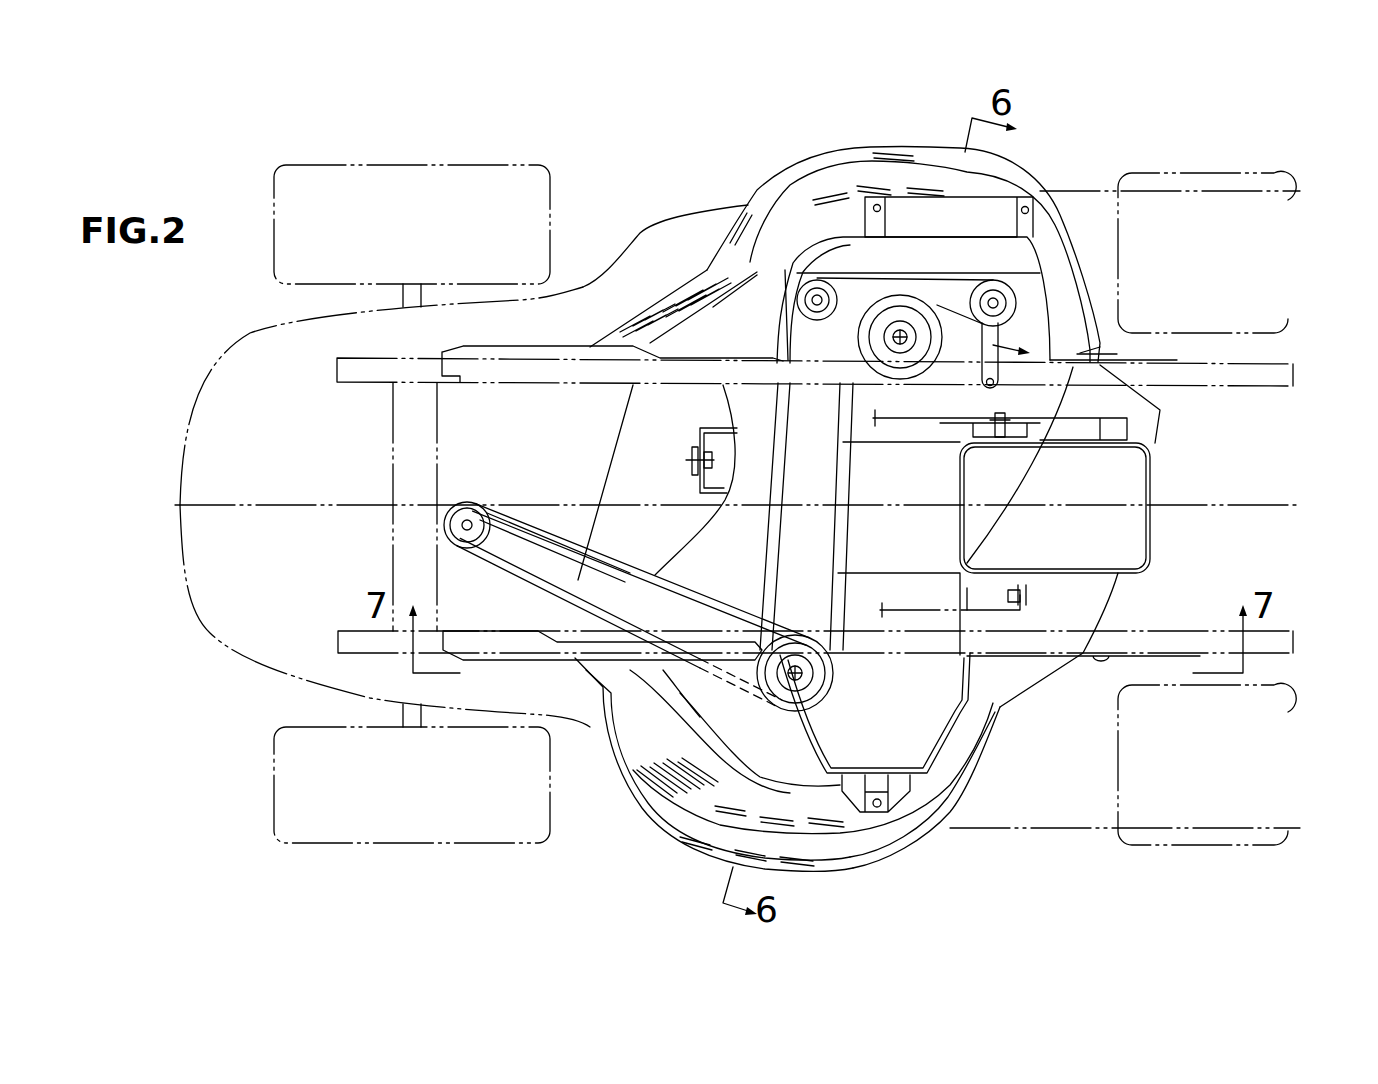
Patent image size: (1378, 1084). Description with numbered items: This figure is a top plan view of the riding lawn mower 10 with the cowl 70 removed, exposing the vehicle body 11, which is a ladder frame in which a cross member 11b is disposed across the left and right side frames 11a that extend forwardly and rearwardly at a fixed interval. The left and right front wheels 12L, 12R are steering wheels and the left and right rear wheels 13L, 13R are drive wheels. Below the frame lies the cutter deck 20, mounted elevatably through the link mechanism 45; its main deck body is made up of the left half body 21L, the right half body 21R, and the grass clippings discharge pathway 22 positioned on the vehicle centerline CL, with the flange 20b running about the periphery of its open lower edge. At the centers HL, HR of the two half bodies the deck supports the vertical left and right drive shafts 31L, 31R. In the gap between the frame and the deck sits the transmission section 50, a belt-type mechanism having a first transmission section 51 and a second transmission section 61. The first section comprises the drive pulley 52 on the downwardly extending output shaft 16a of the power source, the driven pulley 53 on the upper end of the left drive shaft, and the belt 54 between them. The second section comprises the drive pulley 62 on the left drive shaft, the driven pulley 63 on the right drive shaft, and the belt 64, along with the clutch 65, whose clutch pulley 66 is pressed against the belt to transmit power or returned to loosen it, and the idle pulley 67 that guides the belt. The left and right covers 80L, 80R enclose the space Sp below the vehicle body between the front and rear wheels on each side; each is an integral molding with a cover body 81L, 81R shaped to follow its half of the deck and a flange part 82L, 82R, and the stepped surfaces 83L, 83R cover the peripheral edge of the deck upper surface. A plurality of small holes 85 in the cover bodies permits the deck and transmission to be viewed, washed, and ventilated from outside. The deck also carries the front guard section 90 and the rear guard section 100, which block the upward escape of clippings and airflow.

The riding lawn mower 10 is at (240, 835).
The vehicle body 11 is at (760, 503).
The side frames 11a is at (355, 383).
The cross member 11b is at (392, 462).
The right front wheel 12R is at (408, 165).
The left front wheel 12L is at (395, 843).
The right rear wheel 13R is at (1212, 173).
The left rear wheel 13L is at (1220, 847).
The output shaft 16a is at (462, 525).
The cutter deck 20 is at (1115, 536).
The flange 20b is at (1033, 178).
The right half body 21R is at (1057, 397).
The left half body 21L is at (943, 663).
The grass clippings discharge pathway 22 is at (1147, 480).
The right drive shaft 31R is at (890, 333).
The left drive shaft 31L is at (795, 667).
The link mechanism 45 is at (935, 425).
The transmission section 50 is at (633, 563).
The first transmission section 51 is at (603, 545).
The drive pulley 52 is at (443, 542).
The driven pulley 53 is at (810, 695).
The belt 54 is at (493, 567).
The second transmission section 61 is at (760, 533).
The drive pulley 62 is at (833, 694).
The driven pulley 63 is at (875, 300).
The belt 64 is at (760, 573).
The clutch 65 is at (1018, 278).
The clutch pulley 66 is at (1015, 303).
The idle pulley 67 is at (771, 197).
The cowl 70 is at (222, 660).
The right cover 80R is at (836, 218).
The left cover 80L is at (757, 793).
The right cover body 81R is at (742, 218).
The left cover body 81L is at (703, 800).
The flange part 82R is at (573, 348).
The flange part 82L is at (537, 661).
The stepped surface 83R is at (868, 172).
The stepped surface 83L is at (913, 830).
The small holes 85 is at (637, 320).
The front guard section 90 is at (640, 416).
The rear guard section 100 is at (1090, 617).
The center of right half body HR is at (900, 330).
The center of left half body HL is at (810, 675).
The centerline CL is at (208, 505).
The space Sp is at (573, 184).